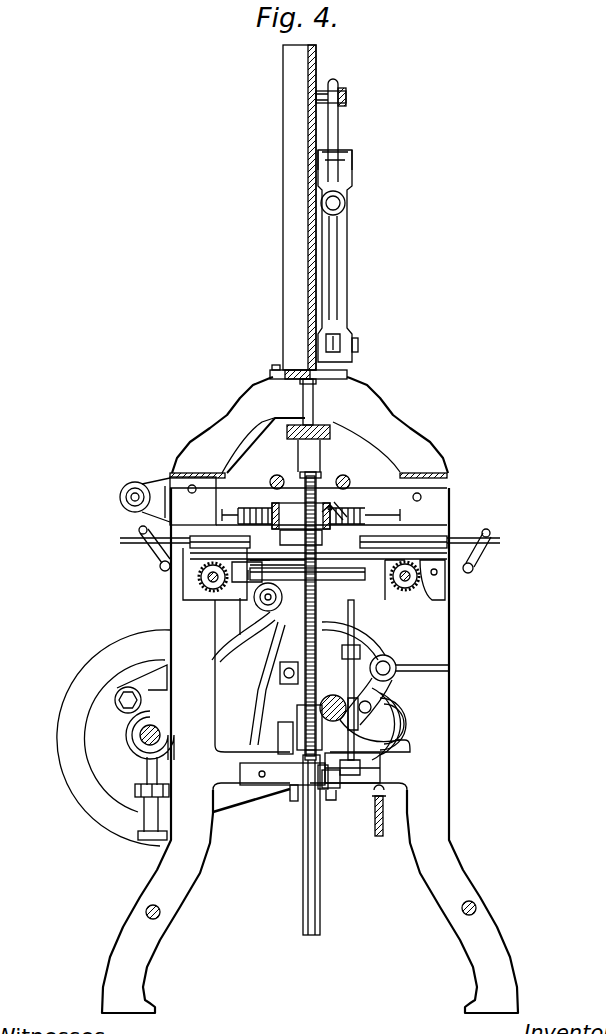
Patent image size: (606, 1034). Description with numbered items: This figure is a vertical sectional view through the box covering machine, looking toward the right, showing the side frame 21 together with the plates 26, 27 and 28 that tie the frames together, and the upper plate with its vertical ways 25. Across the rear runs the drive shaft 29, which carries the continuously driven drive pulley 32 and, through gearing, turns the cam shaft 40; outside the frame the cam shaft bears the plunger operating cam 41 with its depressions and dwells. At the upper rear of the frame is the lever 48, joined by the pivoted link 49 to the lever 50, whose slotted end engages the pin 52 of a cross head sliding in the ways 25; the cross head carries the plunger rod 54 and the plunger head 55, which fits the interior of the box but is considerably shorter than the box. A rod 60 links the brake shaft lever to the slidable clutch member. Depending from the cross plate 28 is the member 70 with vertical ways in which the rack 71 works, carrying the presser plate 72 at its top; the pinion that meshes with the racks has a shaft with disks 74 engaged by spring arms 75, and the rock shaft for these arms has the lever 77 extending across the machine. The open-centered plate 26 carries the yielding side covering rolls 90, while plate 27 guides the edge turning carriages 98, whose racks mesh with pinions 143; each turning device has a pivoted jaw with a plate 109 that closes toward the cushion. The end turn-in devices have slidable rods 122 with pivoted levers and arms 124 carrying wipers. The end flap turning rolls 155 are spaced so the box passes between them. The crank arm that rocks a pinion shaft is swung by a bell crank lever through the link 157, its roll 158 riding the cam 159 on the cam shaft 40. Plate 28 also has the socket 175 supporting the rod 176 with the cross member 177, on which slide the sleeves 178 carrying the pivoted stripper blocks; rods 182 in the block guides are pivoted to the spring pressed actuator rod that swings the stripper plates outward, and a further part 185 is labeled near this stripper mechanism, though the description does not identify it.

The side frame 21 is at (460, 862).
The vertical ways 25 is at (285, 226).
The plate 26 is at (394, 471).
The plate 27 is at (442, 580).
The cross plate 28 is at (381, 778).
The drive shaft 29 is at (160, 728).
The drive pulley 32 is at (57, 742).
The cam shaft 40 is at (333, 697).
The plunger operating cam 41 is at (386, 652).
The lever 48 is at (170, 478).
The pivoted link 49 is at (349, 279).
The lever 50 is at (340, 132).
The pin 52 is at (347, 100).
The plunger rod 54 is at (314, 398).
The plunger head 55 is at (331, 426).
The rod 60 is at (136, 800).
The member 70 is at (321, 858).
The rack 71 is at (306, 562).
The presser plate 72 is at (312, 471).
The disk 74 is at (338, 790).
The spring arm 75 is at (292, 800).
The lever 77 is at (383, 830).
The side covering roll 90 is at (277, 476).
The edge turning carriage 98 is at (217, 548).
The plate 109 is at (330, 502).
The slidable rod 122 is at (148, 541).
The arm 124 is at (318, 556).
The pinion 143 is at (213, 591).
The end flap turning roll 155 is at (350, 580).
The link 157 is at (403, 680).
The roll 158 is at (412, 708).
The cam 159 is at (392, 716).
The socket 175 is at (250, 768).
The rod 176 is at (251, 799).
The cross member 177 is at (290, 686).
The sleeve 178 is at (270, 712).
The rod 182 is at (356, 618).
The block 185 is at (301, 708).